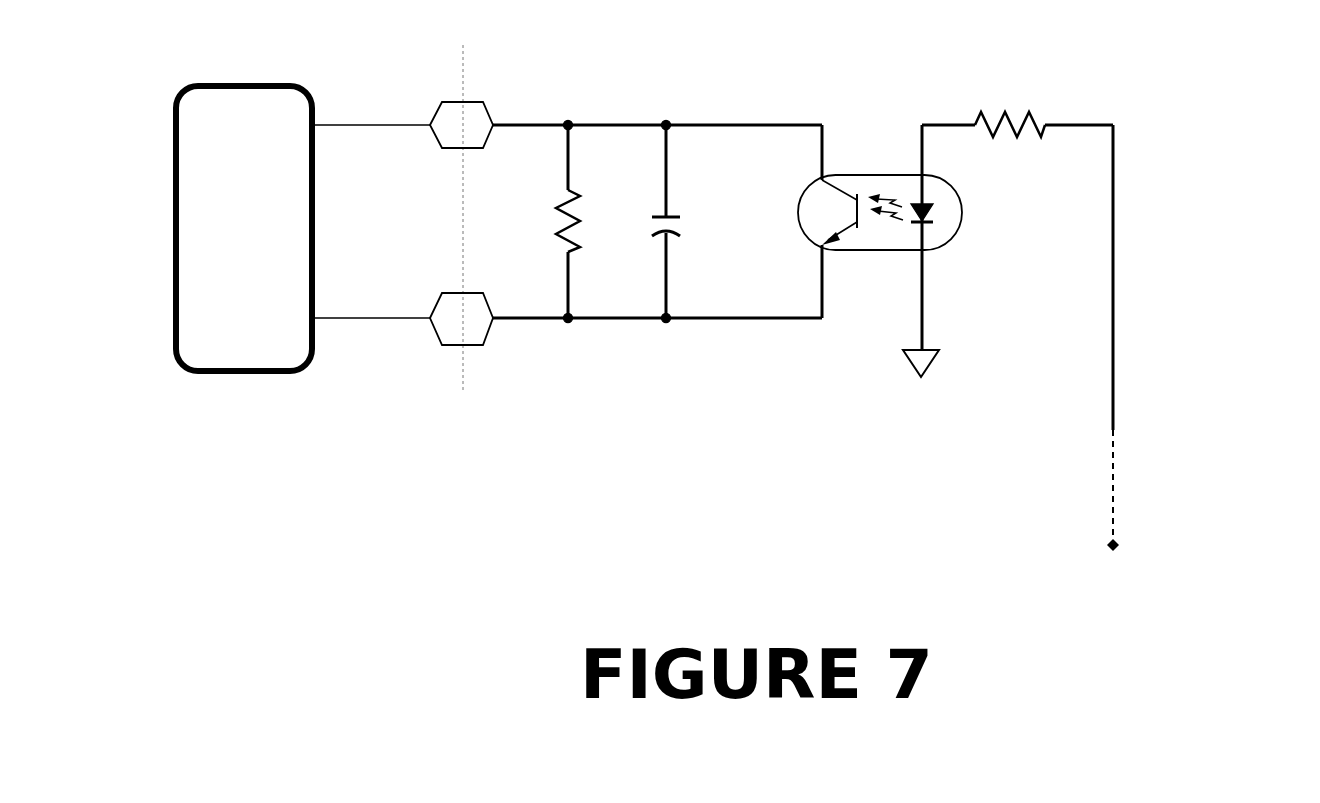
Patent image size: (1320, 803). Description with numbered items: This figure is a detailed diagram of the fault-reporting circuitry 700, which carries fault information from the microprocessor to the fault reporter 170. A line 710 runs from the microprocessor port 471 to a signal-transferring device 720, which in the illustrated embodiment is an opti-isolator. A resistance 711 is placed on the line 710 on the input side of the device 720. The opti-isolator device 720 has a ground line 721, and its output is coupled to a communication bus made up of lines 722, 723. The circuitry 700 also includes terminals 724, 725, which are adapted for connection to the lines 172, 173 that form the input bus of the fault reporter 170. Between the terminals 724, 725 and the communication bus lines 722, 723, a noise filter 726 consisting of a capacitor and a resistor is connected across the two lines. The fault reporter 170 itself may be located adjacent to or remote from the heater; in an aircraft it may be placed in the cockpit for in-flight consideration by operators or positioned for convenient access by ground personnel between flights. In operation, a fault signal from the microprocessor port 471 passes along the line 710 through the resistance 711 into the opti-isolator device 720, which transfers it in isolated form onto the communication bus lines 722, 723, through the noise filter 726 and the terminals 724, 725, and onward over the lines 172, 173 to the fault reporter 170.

The fault reporter 170 is at (244, 228).
The line 172 is at (371, 112).
The line 173 is at (371, 313).
The terminal 724 is at (461, 141).
The terminal 725 is at (461, 305).
The noise filter 726 is at (618, 222).
The line 722 is at (770, 123).
The line 723 is at (725, 320).
The signal-transferring device 720 is at (880, 237).
The ground line 721 is at (925, 300).
The resistance 711 is at (1017, 125).
The line 710 is at (1113, 300).
The microprocessor port 471 is at (1120, 501).
The fault-reporting circuitry 700 is at (673, 471).